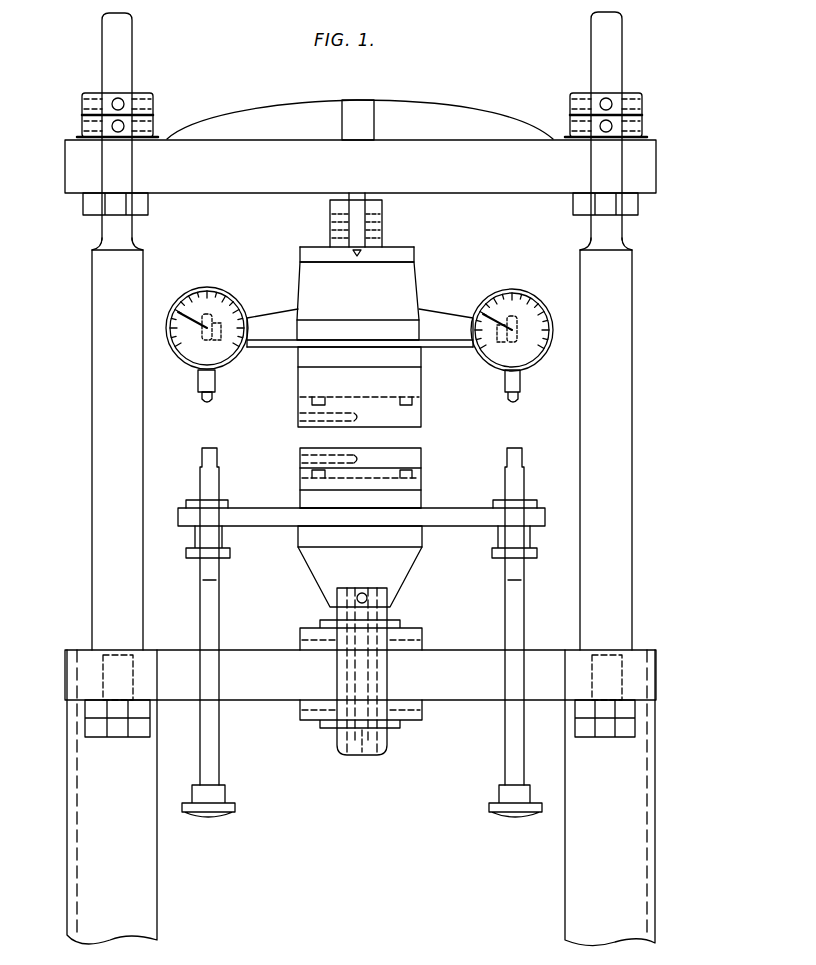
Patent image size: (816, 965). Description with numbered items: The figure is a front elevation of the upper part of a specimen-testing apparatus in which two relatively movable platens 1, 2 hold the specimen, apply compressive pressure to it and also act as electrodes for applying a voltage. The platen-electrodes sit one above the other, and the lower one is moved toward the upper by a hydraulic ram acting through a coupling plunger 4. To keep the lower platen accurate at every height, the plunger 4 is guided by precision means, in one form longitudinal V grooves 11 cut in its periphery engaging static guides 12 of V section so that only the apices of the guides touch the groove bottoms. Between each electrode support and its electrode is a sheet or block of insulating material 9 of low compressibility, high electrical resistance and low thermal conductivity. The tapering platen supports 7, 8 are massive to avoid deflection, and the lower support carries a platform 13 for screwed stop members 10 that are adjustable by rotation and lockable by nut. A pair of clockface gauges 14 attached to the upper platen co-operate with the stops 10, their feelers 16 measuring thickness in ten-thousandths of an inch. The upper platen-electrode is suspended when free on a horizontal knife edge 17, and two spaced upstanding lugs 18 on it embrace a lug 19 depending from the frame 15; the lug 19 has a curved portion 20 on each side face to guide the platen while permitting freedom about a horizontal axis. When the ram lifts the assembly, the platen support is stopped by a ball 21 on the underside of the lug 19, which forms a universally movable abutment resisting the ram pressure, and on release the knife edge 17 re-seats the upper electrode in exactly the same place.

The platen 1 is at (421, 422).
The platen 2 is at (421, 457).
The coupling plunger 4 is at (388, 743).
The upper holder 7 is at (420, 328).
The lower holder 8 is at (422, 541).
The insulating material 9 is at (421, 357).
The screwed stop members 10 is at (218, 452).
The longitudinal V grooves 11 is at (388, 613).
The static guides 12 is at (401, 624).
The platform 13 is at (469, 521).
The clockface gauges 14 is at (238, 352).
The frame 15 is at (524, 150).
The feeler pin 16 is at (213, 399).
The knife edge 17 is at (383, 224).
The upstanding lugs 18 is at (329, 210).
The lug 19 is at (367, 200).
The curved portion 20 is at (330, 247).
The ball 21 is at (357, 258).